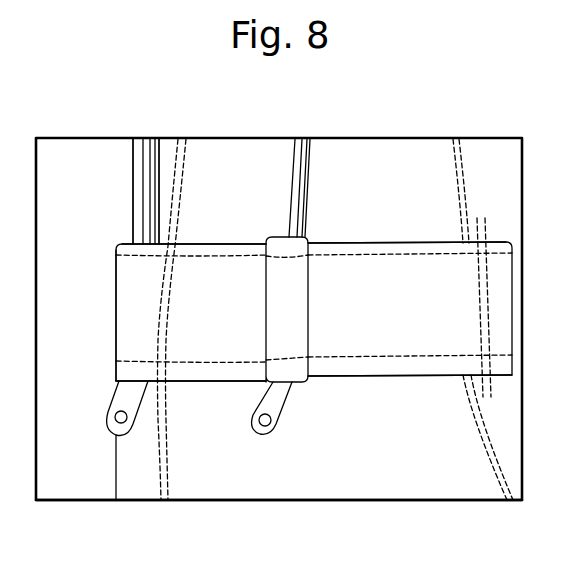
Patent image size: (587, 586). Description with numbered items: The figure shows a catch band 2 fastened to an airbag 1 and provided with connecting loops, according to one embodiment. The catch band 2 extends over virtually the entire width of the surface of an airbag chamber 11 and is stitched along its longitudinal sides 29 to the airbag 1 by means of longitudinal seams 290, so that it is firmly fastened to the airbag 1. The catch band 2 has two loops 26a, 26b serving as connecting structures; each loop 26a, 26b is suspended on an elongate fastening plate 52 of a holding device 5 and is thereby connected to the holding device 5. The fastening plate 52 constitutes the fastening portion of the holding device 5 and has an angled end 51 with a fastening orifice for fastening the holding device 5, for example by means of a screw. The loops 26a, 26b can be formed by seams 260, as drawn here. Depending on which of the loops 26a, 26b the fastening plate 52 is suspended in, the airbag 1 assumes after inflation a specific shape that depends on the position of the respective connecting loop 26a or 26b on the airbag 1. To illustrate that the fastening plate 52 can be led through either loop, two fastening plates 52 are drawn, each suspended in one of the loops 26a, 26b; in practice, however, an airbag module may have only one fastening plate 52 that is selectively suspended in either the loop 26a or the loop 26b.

The airbag 1 is at (537, 139).
The catch band 2 is at (458, 298).
The holding device 5 is at (130, 208).
The airbag chamber 11 is at (367, 481).
The loop 26a is at (290, 288).
The loop 26b is at (131, 310).
The longitudinal sides 29 is at (387, 242).
The angled end 51 is at (125, 398).
The fastening plate 52 is at (134, 170).
The seams 260 is at (162, 283).
The longitudinal seams 290 is at (432, 244).